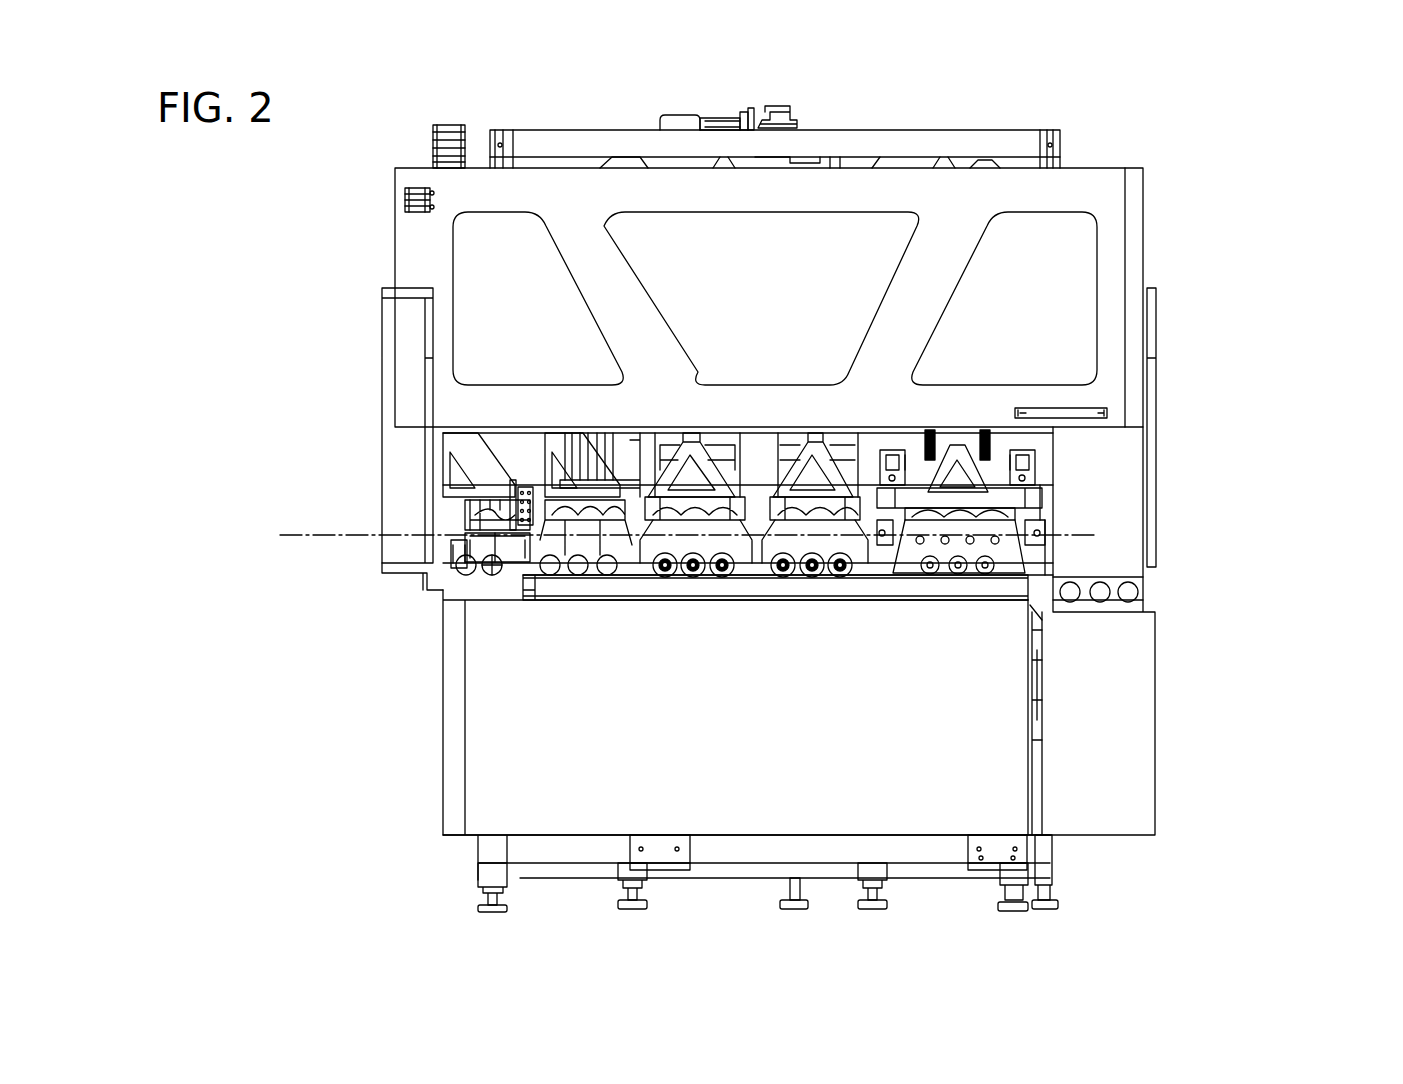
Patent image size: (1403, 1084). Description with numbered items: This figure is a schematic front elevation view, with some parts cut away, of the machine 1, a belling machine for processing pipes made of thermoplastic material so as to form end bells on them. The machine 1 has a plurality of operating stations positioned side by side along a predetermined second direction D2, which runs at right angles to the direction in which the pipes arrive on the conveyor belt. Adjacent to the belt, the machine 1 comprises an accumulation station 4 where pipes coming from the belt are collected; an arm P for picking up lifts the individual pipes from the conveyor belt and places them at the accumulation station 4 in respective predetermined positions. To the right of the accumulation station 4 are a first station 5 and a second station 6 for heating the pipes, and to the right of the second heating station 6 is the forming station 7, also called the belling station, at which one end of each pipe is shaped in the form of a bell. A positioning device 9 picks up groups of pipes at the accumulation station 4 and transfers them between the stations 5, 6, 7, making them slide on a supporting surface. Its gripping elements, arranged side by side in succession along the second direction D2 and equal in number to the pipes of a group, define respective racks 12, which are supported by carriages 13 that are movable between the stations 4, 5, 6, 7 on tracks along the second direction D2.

The machine 1 is at (1228, 321).
The accumulation station 4 is at (560, 586).
The first heating station 5 is at (694, 588).
The second heating station 6 is at (813, 588).
The forming station 7 is at (957, 588).
The positioning device 9 is at (520, 572).
The rack 12 is at (1045, 550).
The carriage 13 is at (995, 443).
The arm for picking up P is at (457, 568).
The second direction D2 is at (327, 533).